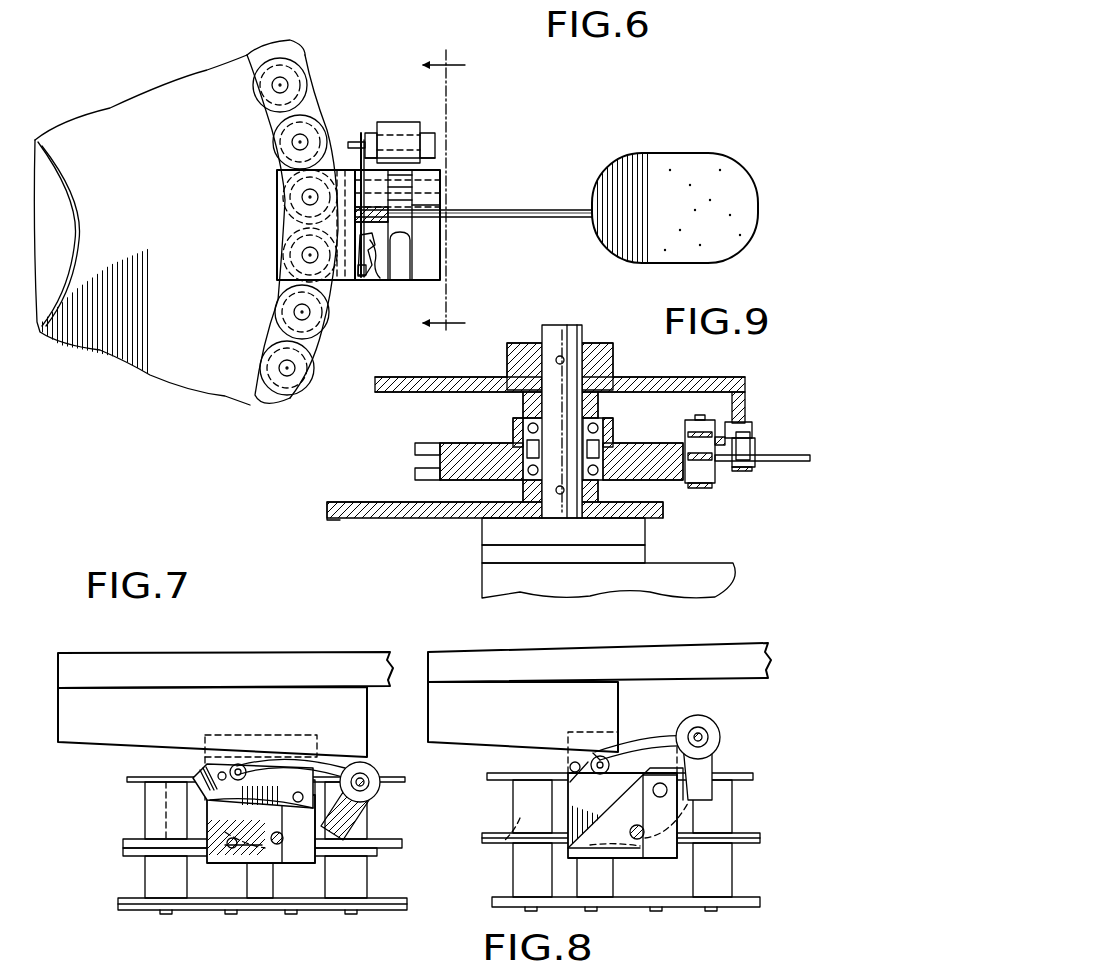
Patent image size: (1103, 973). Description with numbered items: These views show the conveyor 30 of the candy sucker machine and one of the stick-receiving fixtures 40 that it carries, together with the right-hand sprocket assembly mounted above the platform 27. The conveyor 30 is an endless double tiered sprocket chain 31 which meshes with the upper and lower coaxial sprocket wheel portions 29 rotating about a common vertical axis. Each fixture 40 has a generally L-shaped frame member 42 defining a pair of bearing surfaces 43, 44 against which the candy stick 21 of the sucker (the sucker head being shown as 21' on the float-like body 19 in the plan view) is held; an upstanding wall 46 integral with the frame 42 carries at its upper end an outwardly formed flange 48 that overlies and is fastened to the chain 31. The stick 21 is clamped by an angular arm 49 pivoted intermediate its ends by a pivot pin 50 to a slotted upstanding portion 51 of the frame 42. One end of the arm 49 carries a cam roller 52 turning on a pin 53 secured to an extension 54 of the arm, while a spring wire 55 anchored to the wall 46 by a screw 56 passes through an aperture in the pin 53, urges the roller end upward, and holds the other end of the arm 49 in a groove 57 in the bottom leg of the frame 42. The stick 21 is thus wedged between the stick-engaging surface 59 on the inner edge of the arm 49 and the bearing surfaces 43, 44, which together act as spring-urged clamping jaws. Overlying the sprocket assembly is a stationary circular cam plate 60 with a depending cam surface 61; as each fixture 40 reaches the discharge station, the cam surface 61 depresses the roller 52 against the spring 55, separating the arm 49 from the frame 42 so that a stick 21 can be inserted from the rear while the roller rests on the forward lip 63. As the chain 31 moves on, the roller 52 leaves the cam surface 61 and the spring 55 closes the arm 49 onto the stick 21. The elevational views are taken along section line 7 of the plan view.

In FIG. 6, the section line 7 is at (444, 193).
In FIG. 6, the float 19 is at (622, 152).
In FIG. 6, the candy stick 21 is at (473, 228).
In FIG. 9, the candy stick 21 is at (762, 473).
In FIG. 7, the candy stick 21 is at (239, 832).
In FIG. 8, the candy stick 21 is at (615, 883).
In FIG. 6, the float body 21' is at (721, 189).
In FIG. 9, the platform 27 is at (716, 563).
In FIG. 6, the sprocket wheel portions 29 is at (114, 120).
In FIG. 9, the sprocket wheel portions 29 is at (423, 438).
In FIG. 7, the conveyor 30 is at (145, 808).
In FIG. 6, the double tiered sprocket chain 31 is at (297, 63).
In FIG. 9, the double tiered sprocket chain 31 is at (710, 484).
In FIG. 7, the double tiered sprocket chain 31 is at (156, 878).
In FIG. 8, the double tiered sprocket chain 31 is at (520, 865).
In FIG. 6, the stick-receiving fixture 40 is at (372, 283).
In FIG. 9, the stick-receiving fixture 40 is at (758, 432).
In FIG. 7, the stick-receiving fixture 40 is at (202, 763).
In FIG. 8, the stick-receiving fixture 40 is at (650, 736).
In FIG. 6, the L-shaped frame member 42 is at (428, 253).
In FIG. 7, the L-shaped frame member 42 is at (297, 855).
In FIG. 8, the L-shaped frame member 42 is at (658, 850).
In FIG. 7, the bearing surface 43 is at (227, 843).
In FIG. 6, the bearing surface 44 is at (432, 207).
In FIG. 7, the bearing surface 44 is at (283, 836).
In FIG. 6, the upstanding wall 46 is at (348, 284).
In FIG. 7, the upstanding wall 46 is at (205, 762).
In FIG. 8, the upstanding wall 46 is at (567, 757).
In FIG. 6, the flange 48 is at (277, 212).
In FIG. 9, the flange 48 is at (687, 425).
In FIG. 6, the angular arm 49 is at (404, 268).
In FIG. 9, the angular arm 49 is at (751, 442).
In FIG. 7, the angular arm 49 is at (269, 804).
In FIG. 8, the angular arm 49 is at (632, 826).
In FIG. 6, the pivot pin 50 is at (427, 190).
In FIG. 7, the pivot pin 50 is at (298, 791).
In FIG. 8, the pivot pin 50 is at (652, 790).
In FIG. 6, the upstanding portion 51 is at (437, 178).
In FIG. 7, the upstanding portion 51 is at (308, 852).
In FIG. 8, the upstanding portion 51 is at (668, 813).
In FIG. 6, the cam roller 52 is at (398, 122).
In FIG. 9, the cam roller 52 is at (733, 422).
In FIG. 7, the cam roller 52 is at (372, 773).
In FIG. 8, the cam roller 52 is at (700, 722).
In FIG. 7, the pin 53 is at (365, 800).
In FIG. 8, the pin 53 is at (711, 737).
In FIG. 7, the extension 54 is at (338, 820).
In FIG. 8, the extension 54 is at (722, 757).
In FIG. 6, the spring wire 55 is at (357, 150).
In FIG. 7, the spring wire 55 is at (330, 745).
In FIG. 8, the spring wire 55 is at (623, 757).
In FIG. 6, the screw 56 is at (379, 279).
In FIG. 7, the screw 56 is at (239, 764).
In FIG. 8, the screw 56 is at (598, 756).
In FIG. 6, the groove 57 is at (423, 268).
In FIG. 7, the groove 57 is at (230, 854).
In FIG. 8, the groove 57 is at (575, 853).
In FIG. 7, the stick-engaging surface 59 is at (228, 806).
In FIG. 8, the stick-engaging surface 59 is at (652, 830).
In FIG. 9, the cam plate 60 is at (463, 385).
In FIG. 7, the cam plate 60 is at (252, 662).
In FIG. 8, the cam plate 60 is at (760, 670).
In FIG. 9, the cam surface 61 is at (746, 411).
In FIG. 7, the cam surface 61 is at (92, 745).
In FIG. 8, the cam surface 61 is at (476, 749).
In FIG. 7, the forward lip 63 is at (346, 758).
In FIG. 8, the forward lip 63 is at (617, 731).